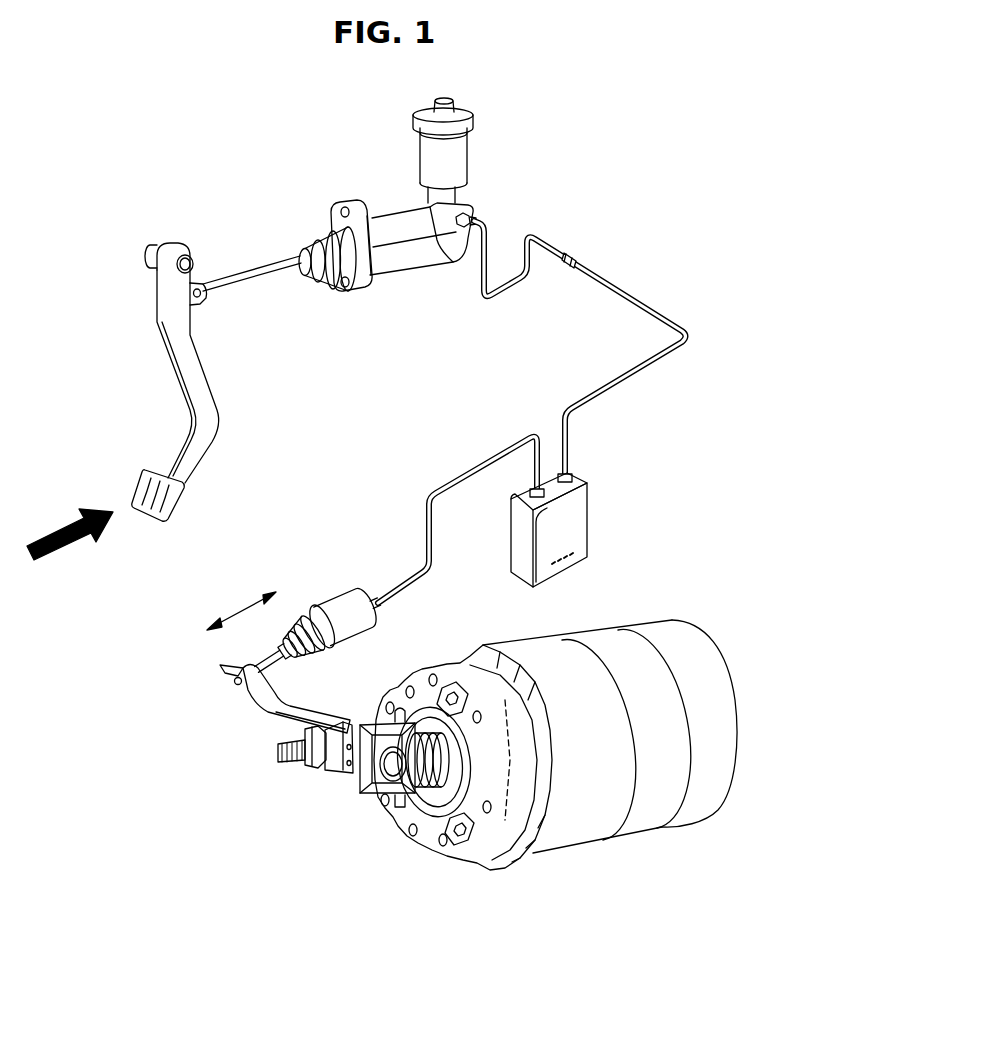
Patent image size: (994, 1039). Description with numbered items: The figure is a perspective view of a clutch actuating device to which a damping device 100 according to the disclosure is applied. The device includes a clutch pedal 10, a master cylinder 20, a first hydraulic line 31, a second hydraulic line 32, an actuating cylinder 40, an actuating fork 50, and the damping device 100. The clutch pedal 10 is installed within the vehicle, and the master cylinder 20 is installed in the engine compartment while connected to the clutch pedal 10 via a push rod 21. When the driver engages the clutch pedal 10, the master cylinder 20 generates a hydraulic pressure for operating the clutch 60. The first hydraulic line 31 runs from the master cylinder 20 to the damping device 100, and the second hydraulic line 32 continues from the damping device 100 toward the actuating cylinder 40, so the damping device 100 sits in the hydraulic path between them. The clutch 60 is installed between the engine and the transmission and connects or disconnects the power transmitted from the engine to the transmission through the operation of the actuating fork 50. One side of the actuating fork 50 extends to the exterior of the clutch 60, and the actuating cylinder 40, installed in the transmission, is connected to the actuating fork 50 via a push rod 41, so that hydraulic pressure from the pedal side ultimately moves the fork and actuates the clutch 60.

The clutch pedal 10 is at (202, 459).
The master cylinder 20 is at (397, 228).
The push rod 21 is at (262, 276).
The first hydraulic line 31 is at (612, 287).
The second hydraulic line 32 is at (478, 468).
The actuating cylinder 40 is at (340, 602).
The push rod 41 is at (268, 665).
The actuating fork 50 is at (275, 717).
The clutch 60 is at (453, 867).
The damping device 100 is at (597, 493).